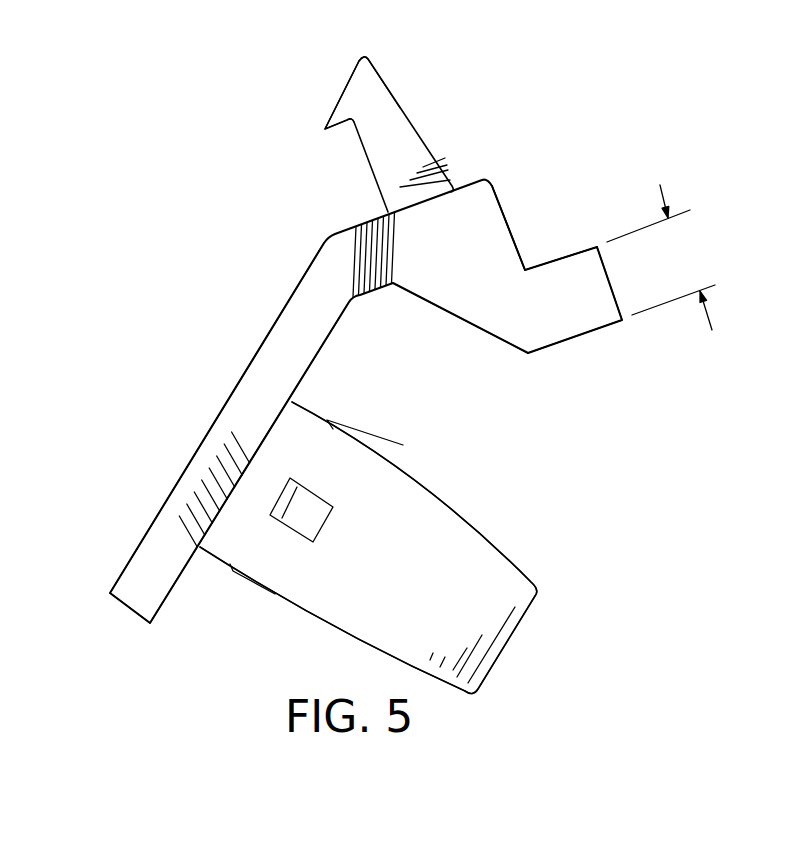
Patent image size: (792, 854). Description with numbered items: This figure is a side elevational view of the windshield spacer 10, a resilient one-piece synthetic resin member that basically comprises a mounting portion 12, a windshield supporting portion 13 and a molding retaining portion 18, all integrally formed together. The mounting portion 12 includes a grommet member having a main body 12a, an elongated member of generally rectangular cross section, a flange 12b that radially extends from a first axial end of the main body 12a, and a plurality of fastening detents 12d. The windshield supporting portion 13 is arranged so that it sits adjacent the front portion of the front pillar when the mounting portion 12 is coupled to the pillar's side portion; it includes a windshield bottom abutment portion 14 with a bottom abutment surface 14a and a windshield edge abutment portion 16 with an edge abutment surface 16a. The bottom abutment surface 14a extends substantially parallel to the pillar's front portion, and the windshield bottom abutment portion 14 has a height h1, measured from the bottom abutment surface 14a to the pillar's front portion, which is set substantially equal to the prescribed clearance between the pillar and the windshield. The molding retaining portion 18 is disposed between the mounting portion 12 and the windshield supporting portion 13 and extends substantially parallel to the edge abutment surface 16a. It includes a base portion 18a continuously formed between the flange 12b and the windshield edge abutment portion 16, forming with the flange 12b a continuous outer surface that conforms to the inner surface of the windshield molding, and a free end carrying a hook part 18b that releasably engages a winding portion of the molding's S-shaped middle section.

The windshield spacer 10 is at (188, 286).
The mounting portion 12 is at (546, 554).
The main body 12a is at (433, 550).
The flange 12b is at (163, 507).
The fastening detents 12d is at (328, 498).
The windshield supporting portion 13 is at (606, 166).
The windshield bottom abutment portion 14 is at (583, 295).
The bottom abutment surface 14a is at (560, 253).
The windshield edge abutment portion 16 is at (463, 237).
The edge abutment surface 16a is at (513, 228).
The molding retaining portion 18 is at (437, 66).
The base portion 18a is at (350, 228).
The hook part 18b is at (362, 98).
The height h1 is at (661, 257).